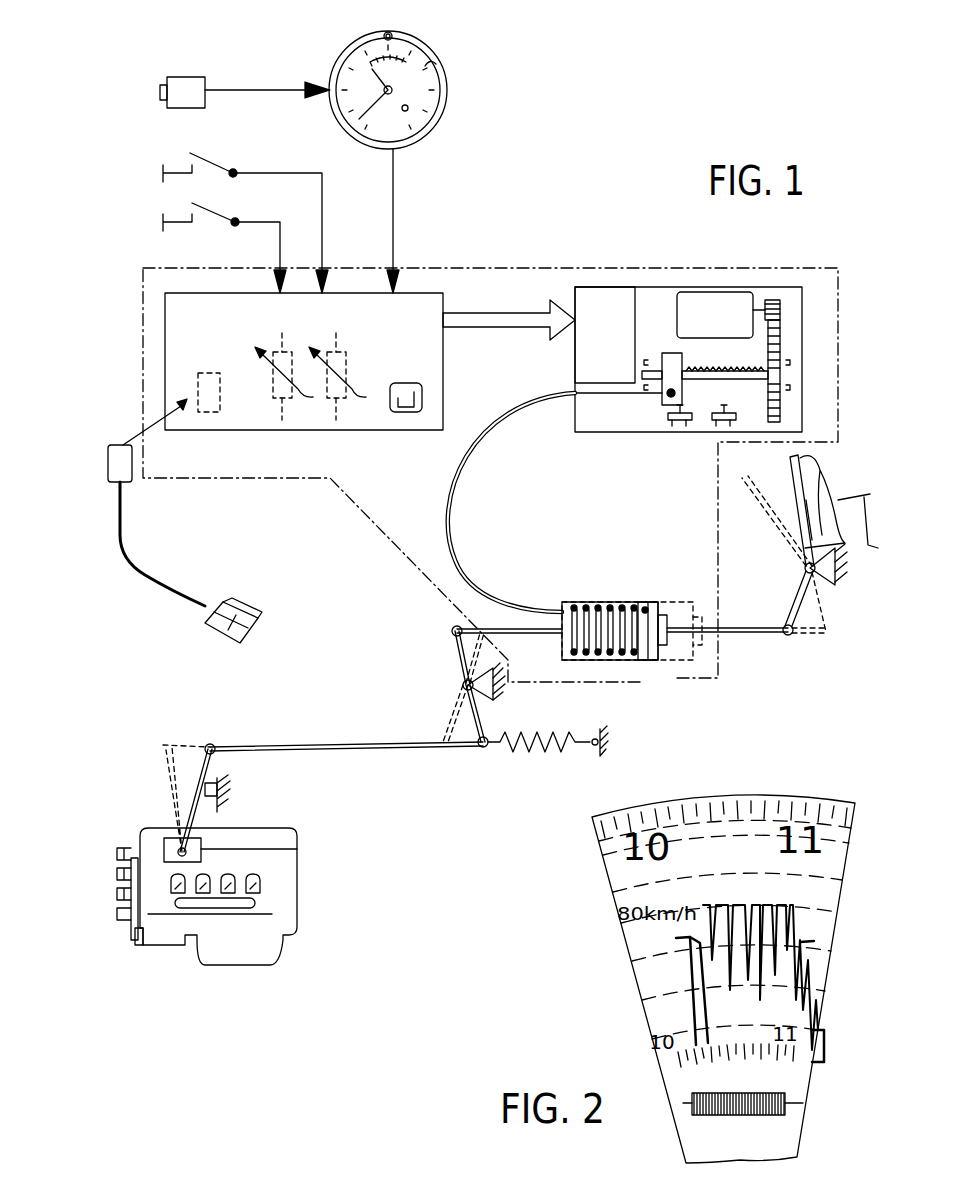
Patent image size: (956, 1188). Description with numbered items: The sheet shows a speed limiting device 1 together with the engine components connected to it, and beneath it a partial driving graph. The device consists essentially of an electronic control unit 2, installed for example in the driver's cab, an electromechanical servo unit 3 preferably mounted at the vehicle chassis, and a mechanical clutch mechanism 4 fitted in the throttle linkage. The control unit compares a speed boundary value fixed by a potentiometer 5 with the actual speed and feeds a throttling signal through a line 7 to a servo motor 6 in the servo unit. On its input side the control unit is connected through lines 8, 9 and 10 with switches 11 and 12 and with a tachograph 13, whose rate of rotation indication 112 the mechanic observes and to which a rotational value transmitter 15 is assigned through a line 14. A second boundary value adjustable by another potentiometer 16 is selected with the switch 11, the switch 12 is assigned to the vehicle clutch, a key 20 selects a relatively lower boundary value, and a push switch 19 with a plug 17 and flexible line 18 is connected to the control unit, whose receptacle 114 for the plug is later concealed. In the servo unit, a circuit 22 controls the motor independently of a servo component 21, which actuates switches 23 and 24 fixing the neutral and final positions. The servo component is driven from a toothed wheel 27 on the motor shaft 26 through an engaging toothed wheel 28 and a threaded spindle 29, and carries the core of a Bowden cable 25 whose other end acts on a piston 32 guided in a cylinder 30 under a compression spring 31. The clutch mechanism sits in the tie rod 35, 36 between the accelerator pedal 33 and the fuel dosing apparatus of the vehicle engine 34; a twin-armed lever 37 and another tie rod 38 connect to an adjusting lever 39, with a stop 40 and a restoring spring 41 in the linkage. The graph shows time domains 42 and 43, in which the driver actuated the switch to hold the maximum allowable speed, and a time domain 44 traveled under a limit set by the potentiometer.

In FIG. 1, the speed limiting device 1 is at (564, 268).
In FIG. 1, the electronic control unit 2 is at (393, 436).
In FIG. 1, the electromechanical servo unit 3 is at (561, 375).
In FIG. 1, the mechanical clutch mechanism 4 is at (637, 593).
In FIG. 1, the potentiometer 5 is at (282, 420).
In FIG. 1, the servo motor 6 is at (704, 326).
In FIG. 1, the line 7 is at (492, 318).
In FIG. 1, the line 8 is at (283, 238).
In FIG. 1, the line 9 is at (324, 251).
In FIG. 1, the line 10 is at (395, 251).
In FIG. 1, the switch 11 is at (200, 212).
In FIG. 1, the switch 12 is at (200, 162).
In FIG. 1, the tachograph 13 is at (336, 66).
In FIG. 1, the line 14 is at (245, 80).
In FIG. 1, the rotational value transmitter 15 is at (182, 77).
In FIG. 1, the potentiometer 16 is at (340, 420).
In FIG. 1, the plug 17 is at (130, 482).
In FIG. 1, the flexible line 18 is at (126, 549).
In FIG. 1, the push switch 19 is at (220, 600).
In FIG. 1, the key 20 is at (404, 385).
In FIG. 1, the servo component 21 is at (668, 395).
In FIG. 1, the circuit 22 is at (593, 324).
In FIG. 1, the switch 23 is at (673, 422).
In FIG. 1, the switch 24 is at (716, 422).
In FIG. 1, the Bowden cable 25 is at (479, 446).
In FIG. 1, the shaft 26 is at (766, 303).
In FIG. 1, the toothed wheel 27 is at (776, 300).
In FIG. 1, the toothed wheel 28 is at (782, 347).
In FIG. 1, the threaded spindle 29 is at (733, 380).
In FIG. 1, the cylinder 30 is at (630, 660).
In FIG. 1, the compression spring 31 is at (587, 660).
In FIG. 1, the piston 32 is at (649, 650).
In FIG. 1, the accelerator pedal 33 is at (793, 498).
In FIG. 1, the vehicle engine 34 is at (278, 885).
In FIG. 1, the tie rod part 35 is at (746, 634).
In FIG. 1, the tie rod part 36 is at (512, 635).
In FIG. 1, the twin-armed lever 37 is at (452, 637).
In FIG. 1, the tie rod 38 is at (315, 747).
In FIG. 1, the adjusting lever 39 is at (172, 761).
In FIG. 1, the stop 40 is at (220, 790).
In FIG. 1, the restoring spring 41 is at (498, 746).
In FIG. 1, the rate of rotation indication 112 is at (436, 64).
In FIG. 1, the receptacle 114 is at (211, 372).
In FIG. 2, the time domain 42 is at (670, 937).
In FIG. 2, the time domain 43 is at (830, 921).
In FIG. 2, the time domain 44 is at (716, 894).